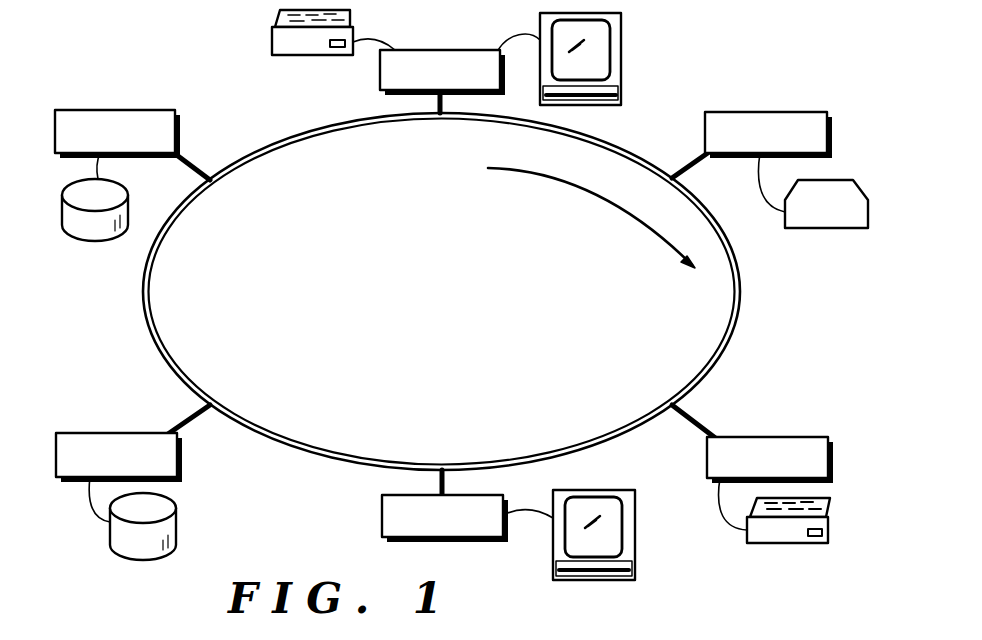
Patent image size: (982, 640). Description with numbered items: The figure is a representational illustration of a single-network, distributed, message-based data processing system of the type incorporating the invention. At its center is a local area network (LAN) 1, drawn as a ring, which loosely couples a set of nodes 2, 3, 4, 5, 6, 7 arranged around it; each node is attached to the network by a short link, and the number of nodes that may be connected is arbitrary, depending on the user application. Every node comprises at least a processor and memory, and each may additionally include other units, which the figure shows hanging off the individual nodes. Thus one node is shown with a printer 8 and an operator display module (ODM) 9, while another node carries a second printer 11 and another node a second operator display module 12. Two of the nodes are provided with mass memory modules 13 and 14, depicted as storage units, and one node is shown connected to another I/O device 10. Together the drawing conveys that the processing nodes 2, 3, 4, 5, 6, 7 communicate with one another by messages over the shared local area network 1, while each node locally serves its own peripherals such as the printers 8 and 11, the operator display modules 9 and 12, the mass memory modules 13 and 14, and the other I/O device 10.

The local area network 1 is at (144, 331).
The node 2 is at (380, 70).
The node 3 is at (790, 112).
The node 4 is at (795, 437).
The node 5 is at (382, 517).
The node 6 is at (95, 433).
The node 7 is at (140, 110).
The printer 8 is at (272, 42).
The operator display module 9 is at (621, 45).
The I/O device 10 is at (822, 228).
The printer 11 is at (790, 543).
The operator display module 12 is at (635, 538).
The mass memory module 13 is at (177, 525).
The mass memory module 14 is at (62, 212).